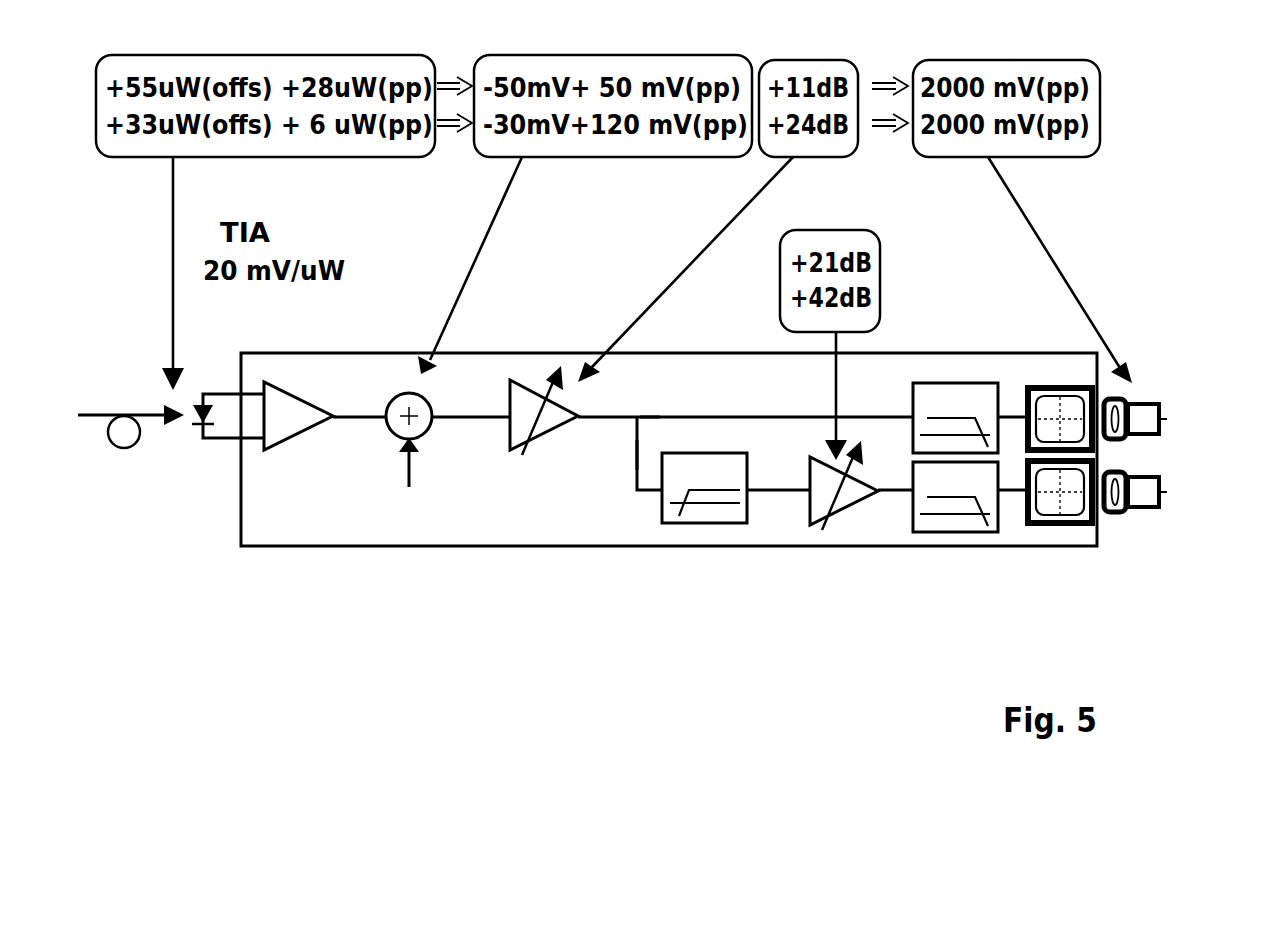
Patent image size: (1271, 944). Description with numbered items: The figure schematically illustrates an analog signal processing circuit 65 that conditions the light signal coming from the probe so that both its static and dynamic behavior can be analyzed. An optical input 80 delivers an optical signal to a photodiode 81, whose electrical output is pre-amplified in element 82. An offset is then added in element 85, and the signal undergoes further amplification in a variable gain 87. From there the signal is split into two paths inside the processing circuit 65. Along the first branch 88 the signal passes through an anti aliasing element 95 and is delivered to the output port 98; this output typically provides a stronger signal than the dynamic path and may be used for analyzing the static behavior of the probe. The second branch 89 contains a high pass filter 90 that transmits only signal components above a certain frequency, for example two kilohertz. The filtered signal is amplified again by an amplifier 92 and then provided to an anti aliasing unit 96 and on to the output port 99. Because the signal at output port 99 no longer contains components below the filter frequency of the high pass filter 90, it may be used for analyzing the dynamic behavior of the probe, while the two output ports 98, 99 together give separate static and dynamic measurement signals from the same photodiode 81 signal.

The processing circuit 65 is at (566, 548).
The optical input 80 is at (93, 420).
The photodiode 81 is at (210, 440).
The pre-amplifier element 82 is at (283, 448).
The offset element 85 is at (392, 432).
The variable gain 87 is at (505, 440).
The first branch 88 is at (664, 417).
The second branch 89 is at (637, 452).
The high pass filter 90 is at (722, 524).
The amplifier 92 is at (855, 505).
The anti aliasing element 95 is at (905, 395).
The anti aliasing unit 96 is at (943, 534).
The output port 98 is at (1167, 418).
The output port 99 is at (1167, 492).